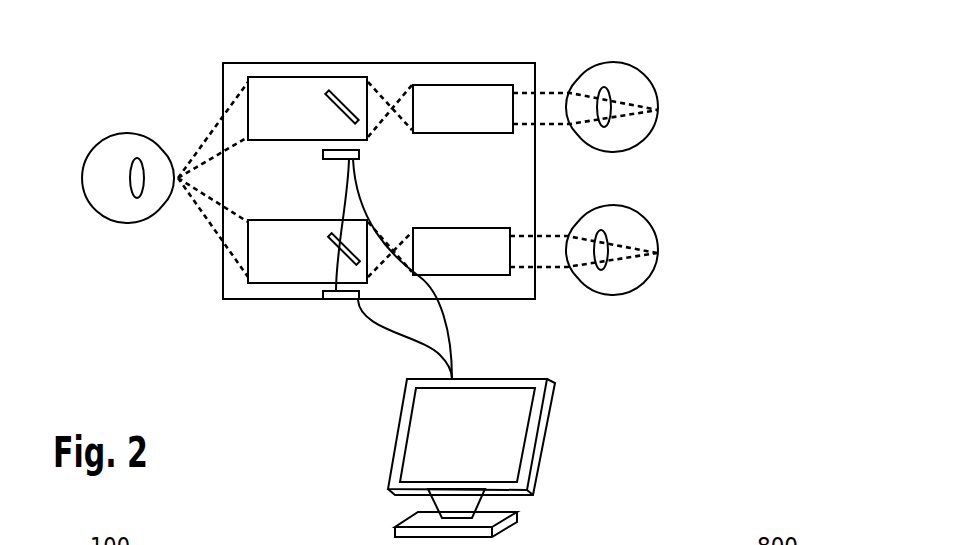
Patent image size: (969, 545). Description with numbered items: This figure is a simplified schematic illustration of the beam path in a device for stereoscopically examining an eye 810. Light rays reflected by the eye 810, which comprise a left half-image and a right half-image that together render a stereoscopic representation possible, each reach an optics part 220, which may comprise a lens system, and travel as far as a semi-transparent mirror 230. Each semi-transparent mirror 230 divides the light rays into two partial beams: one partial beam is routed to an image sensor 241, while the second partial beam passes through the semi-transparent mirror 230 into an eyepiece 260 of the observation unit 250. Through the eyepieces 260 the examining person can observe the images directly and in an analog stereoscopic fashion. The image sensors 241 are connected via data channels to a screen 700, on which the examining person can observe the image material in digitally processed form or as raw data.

The eye 810 is at (95, 185).
The observation unit 250 is at (510, 317).
The optics part 220 is at (262, 232).
The semi-transparent mirror 230 is at (337, 240).
The image sensor 241 is at (337, 300).
The eyepiece 260 is at (476, 252).
The screen 700 is at (497, 460).